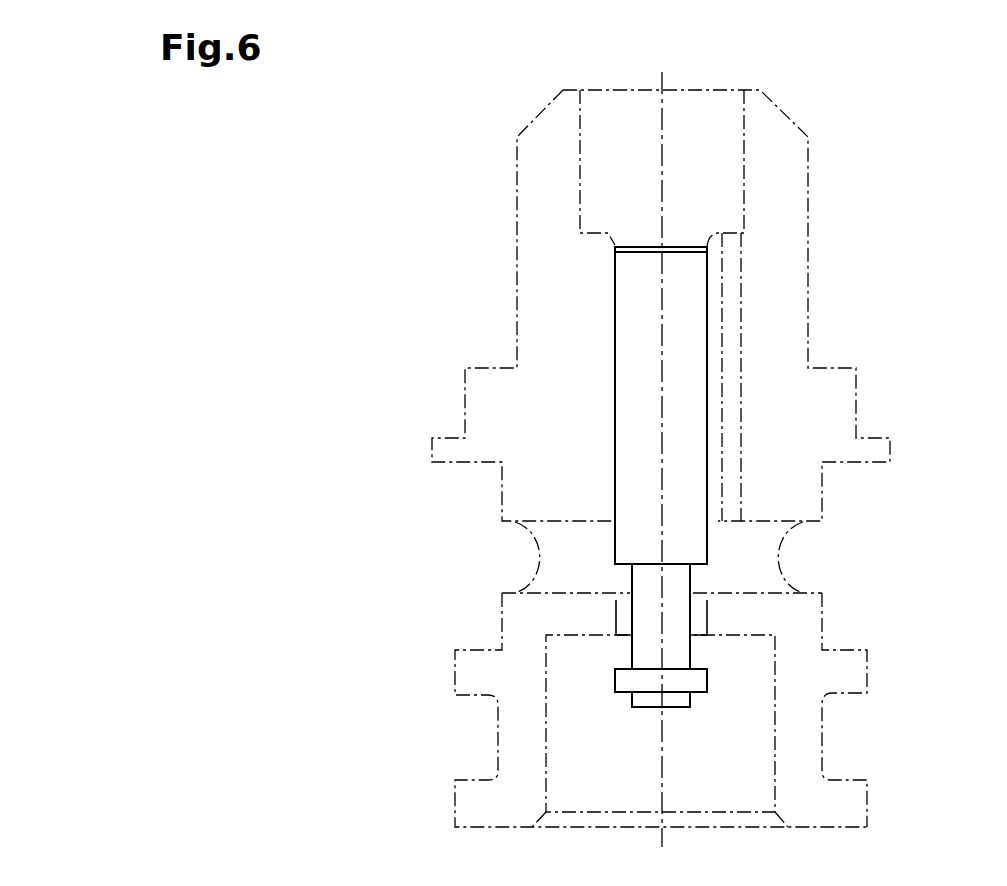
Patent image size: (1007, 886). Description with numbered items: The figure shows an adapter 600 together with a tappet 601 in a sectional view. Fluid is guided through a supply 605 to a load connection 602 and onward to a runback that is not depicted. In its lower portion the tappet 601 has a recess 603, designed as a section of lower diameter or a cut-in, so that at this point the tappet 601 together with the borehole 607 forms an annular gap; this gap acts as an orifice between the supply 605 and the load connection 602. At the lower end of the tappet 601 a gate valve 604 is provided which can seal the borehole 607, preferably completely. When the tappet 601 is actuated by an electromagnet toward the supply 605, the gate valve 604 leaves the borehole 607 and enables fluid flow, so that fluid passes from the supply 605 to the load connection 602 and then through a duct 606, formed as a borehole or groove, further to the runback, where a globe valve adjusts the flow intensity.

The adapter 600 is at (358, 277).
The tappet 601 is at (688, 308).
The load connection 602 is at (747, 555).
The recess 603 is at (675, 629).
The gate valve 604 is at (675, 678).
The supply 605 is at (698, 777).
The duct 606 is at (727, 461).
The borehole 607 is at (707, 607).